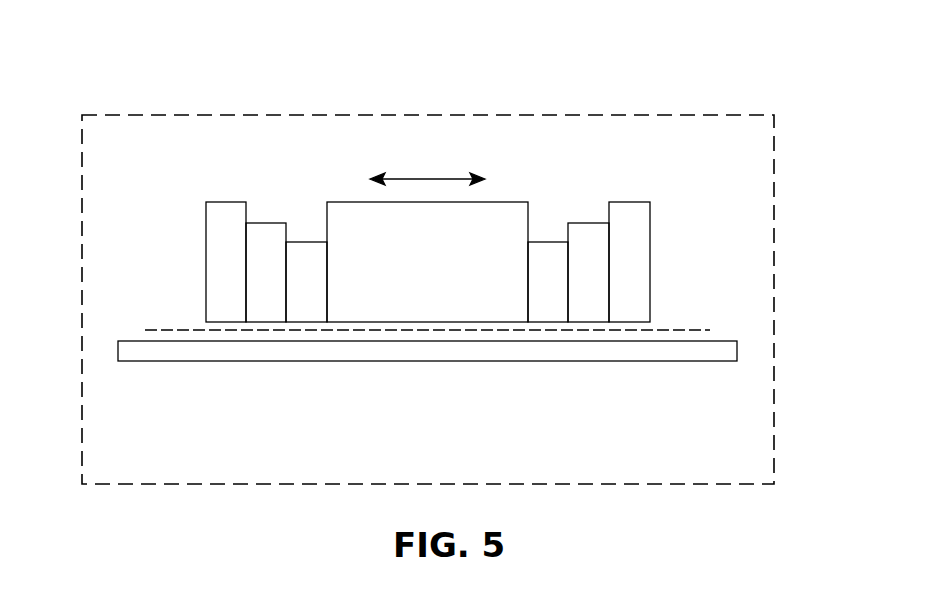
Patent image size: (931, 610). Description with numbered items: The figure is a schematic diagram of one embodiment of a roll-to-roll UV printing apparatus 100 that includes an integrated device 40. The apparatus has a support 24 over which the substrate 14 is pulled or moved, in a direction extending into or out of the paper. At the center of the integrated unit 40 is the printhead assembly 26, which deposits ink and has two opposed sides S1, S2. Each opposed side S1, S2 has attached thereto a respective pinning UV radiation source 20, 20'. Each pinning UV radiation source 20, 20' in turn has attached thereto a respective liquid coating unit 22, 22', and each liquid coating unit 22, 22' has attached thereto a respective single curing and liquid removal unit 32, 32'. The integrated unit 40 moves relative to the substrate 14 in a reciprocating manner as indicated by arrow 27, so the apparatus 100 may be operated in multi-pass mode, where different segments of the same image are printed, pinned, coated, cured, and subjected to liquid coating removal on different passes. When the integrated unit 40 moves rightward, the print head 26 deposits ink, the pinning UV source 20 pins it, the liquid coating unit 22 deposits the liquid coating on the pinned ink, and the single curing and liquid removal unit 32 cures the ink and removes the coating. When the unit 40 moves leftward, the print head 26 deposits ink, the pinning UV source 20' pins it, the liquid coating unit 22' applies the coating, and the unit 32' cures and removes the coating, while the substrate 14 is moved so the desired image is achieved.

The roll-to-roll printing apparatus 100 is at (690, 115).
The integrated device 40 is at (380, 225).
The single curing and liquid removal unit 32 is at (226, 225).
The liquid coating unit 22 is at (266, 235).
The pinning UV radiation source 20 is at (306, 245).
The printhead assembly 26 is at (500, 236).
The pinning UV radiation source 20' is at (551, 245).
The liquid coating unit 22' is at (592, 235).
The single curing and liquid removal unit 32' is at (632, 225).
The arrow 27 is at (425, 178).
The substrate 14 is at (177, 330).
The support 24 is at (178, 362).
The opposed side S1 is at (327, 217).
The opposed side S2 is at (528, 301).